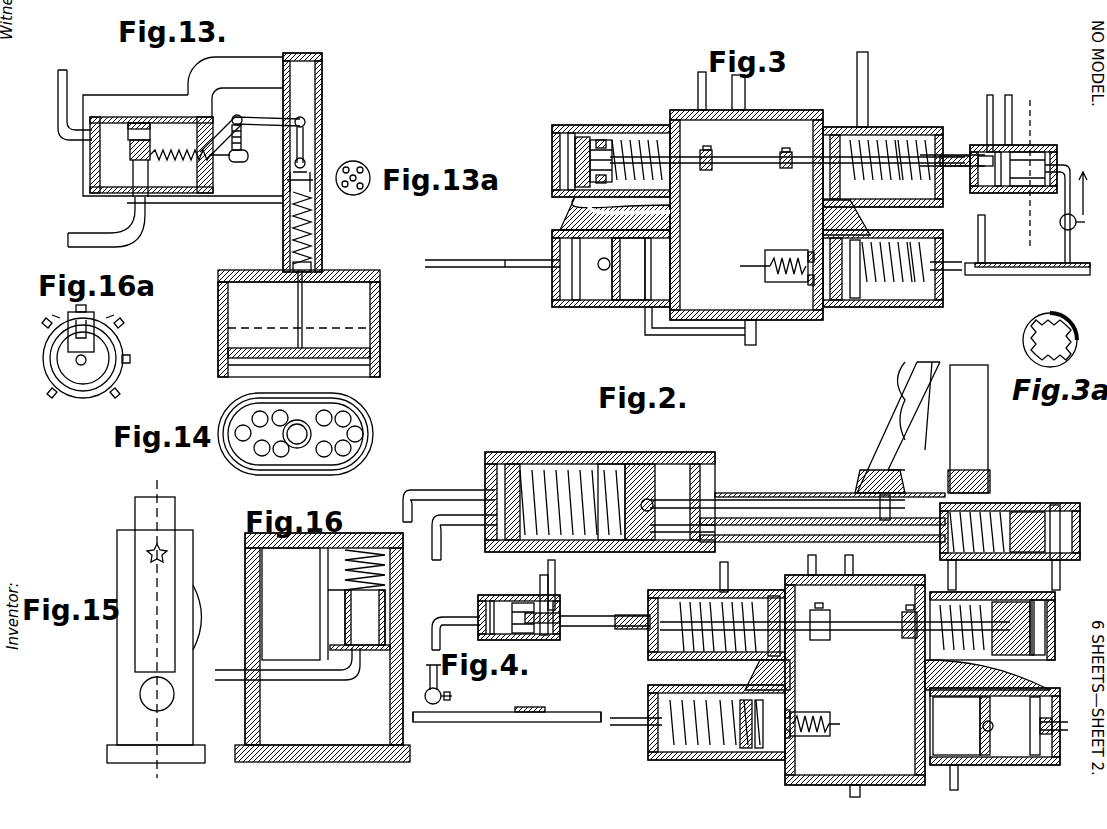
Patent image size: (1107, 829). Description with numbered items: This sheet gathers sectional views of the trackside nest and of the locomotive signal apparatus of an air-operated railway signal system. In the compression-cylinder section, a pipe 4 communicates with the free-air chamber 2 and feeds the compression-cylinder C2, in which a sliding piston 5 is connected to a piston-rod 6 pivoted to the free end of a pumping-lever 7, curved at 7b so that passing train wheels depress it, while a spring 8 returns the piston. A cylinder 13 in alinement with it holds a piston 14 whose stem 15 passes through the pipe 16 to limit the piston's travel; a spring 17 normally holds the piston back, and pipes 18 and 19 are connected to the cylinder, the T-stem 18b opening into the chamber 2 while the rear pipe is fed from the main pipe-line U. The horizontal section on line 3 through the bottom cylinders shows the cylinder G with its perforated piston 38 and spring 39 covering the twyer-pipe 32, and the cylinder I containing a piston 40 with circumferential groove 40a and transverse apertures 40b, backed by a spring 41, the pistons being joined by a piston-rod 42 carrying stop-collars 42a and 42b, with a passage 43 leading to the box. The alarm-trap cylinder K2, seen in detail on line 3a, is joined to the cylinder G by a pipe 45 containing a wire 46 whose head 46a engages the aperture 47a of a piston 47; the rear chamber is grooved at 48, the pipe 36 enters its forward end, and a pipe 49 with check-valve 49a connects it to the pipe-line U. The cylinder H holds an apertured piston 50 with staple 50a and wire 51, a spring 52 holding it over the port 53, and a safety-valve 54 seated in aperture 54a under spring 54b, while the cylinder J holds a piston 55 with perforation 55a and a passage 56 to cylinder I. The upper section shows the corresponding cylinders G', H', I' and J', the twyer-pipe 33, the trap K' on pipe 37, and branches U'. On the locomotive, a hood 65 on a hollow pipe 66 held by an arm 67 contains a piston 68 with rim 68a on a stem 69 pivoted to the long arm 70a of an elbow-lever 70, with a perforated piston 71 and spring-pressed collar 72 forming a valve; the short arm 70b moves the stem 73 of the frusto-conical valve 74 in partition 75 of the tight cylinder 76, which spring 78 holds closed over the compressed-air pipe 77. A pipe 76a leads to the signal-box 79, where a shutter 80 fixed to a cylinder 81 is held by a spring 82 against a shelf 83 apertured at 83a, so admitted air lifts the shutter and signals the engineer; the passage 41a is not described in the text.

In FIG. 3, the air-chamber 2 is at (746, 215).
In FIG. 2, the air-chamber 2 is at (855, 680).
In FIG. 3, the section line 3 is at (708, 330).
In FIG. 2, the section line 3 is at (864, 790).
In FIG. 3, the section line 3a is at (1026, 164).
In FIG. 3, the pipe 4 is at (732, 99).
In FIG. 2, the pipe 4 is at (853, 565).
In FIG. 2, the sliding piston 5 is at (650, 464).
In FIG. 2, the piston-rod 6 is at (730, 493).
In FIG. 2, the pumping-lever 7 is at (880, 437).
In FIG. 3, the curved portion of lever 7b is at (907, 357).
In FIG. 2, the spring 8 is at (545, 470).
In FIG. 2, the cylinder 13 is at (1010, 521).
In FIG. 2, the piston 14 is at (1028, 553).
In FIG. 2, the stem 15 is at (800, 535).
In FIG. 15, the pipe 16 is at (156, 626).
In FIG. 2, the pipe 16 is at (822, 509).
In FIG. 2, the spring 17 is at (988, 512).
In FIG. 2, the pipe 18 is at (966, 575).
In FIG. 3, the T-stem 18b is at (698, 95).
In FIG. 2, the T-stem 18b is at (808, 565).
In FIG. 2, the pipe 19 is at (1068, 547).
In FIG. 3, the twyer-pipe 32 is at (870, 90).
In FIG. 2, the twyer-pipe 33 is at (720, 570).
In FIG. 3, the pipe 36 is at (999, 106).
In FIG. 2, the pipe 37 is at (555, 580).
In FIG. 3, the perforated piston 38 is at (835, 135).
In FIG. 2, the perforated piston 38 is at (782, 612).
In FIG. 3, the spring 39 is at (900, 140).
In FIG. 2, the spring 39 is at (680, 610).
In FIG. 3, the piston 40 is at (592, 160).
In FIG. 2, the piston 40 is at (1025, 630).
In FIG. 3, the circumferential groove 40a is at (590, 140).
In FIG. 2, the circumferential groove 40a is at (1032, 600).
In FIG. 3, the transverse apertures 40b is at (598, 146).
In FIG. 3, the spring 41 is at (632, 140).
In FIG. 2, the spring 41 is at (975, 605).
In FIG. 2, the passage 41a is at (1015, 670).
In FIG. 3, the piston-rod 42 is at (787, 153).
In FIG. 2, the piston-rod 42 is at (835, 622).
In FIG. 3, the collar 42a is at (712, 137).
In FIG. 2, the collar 42a is at (898, 629).
In FIG. 3, the collar 42b is at (782, 138).
In FIG. 2, the collar 42b is at (822, 647).
In FIG. 3, the passage 43 is at (672, 215).
In FIG. 2, the passage 43 is at (925, 677).
In FIG. 3, the pipe 45 is at (948, 155).
In FIG. 2, the pipe 45 is at (598, 610).
In FIG. 3, the wire 46 is at (955, 168).
In FIG. 3, the head 46a is at (990, 168).
In FIG. 2, the head 46a is at (548, 625).
In FIG. 3, the piston 47 is at (1005, 125).
In FIG. 2, the piston 47 is at (530, 600).
In FIG. 3, the aperture 47a is at (998, 152).
In FIG. 2, the aperture 47a is at (496, 600).
In FIG. 3, the groove 48 is at (1040, 152).
In FIG. 3A, the groove 48 is at (1070, 330).
In FIG. 2, the groove 48 is at (520, 635).
In FIG. 3, the pipe 49 is at (1065, 243).
In FIG. 4, the pipe 49 is at (442, 659).
In FIG. 3, the check-valve 49a is at (1062, 214).
In FIG. 4, the check-valve 49a is at (452, 696).
In FIG. 3, the apertured piston 50 is at (838, 300).
In FIG. 2, the apertured piston 50 is at (748, 752).
In FIG. 3, the staple 50a is at (855, 300).
In FIG. 2, the staple 50a is at (735, 752).
In FIG. 3, the wire 51 is at (915, 314).
In FIG. 2, the wire 51 is at (630, 755).
In FIG. 4, the wire 51 is at (530, 701).
In FIG. 3, the spring 52 is at (893, 245).
In FIG. 2, the spring 52 is at (694, 700).
In FIG. 3, the port 53 is at (825, 212).
In FIG. 2, the port 53 is at (790, 673).
In FIG. 3, the safety-valve 54 is at (770, 275).
In FIG. 2, the safety-valve 54 is at (815, 732).
In FIG. 3, the aperture 54a is at (808, 258).
In FIG. 2, the aperture 54a is at (809, 703).
In FIG. 3, the spring 54b is at (808, 282).
In FIG. 2, the spring 54b is at (821, 741).
In FIG. 3, the piston 55 is at (628, 267).
In FIG. 2, the piston 55 is at (988, 726).
In FIG. 3, the perforation 55a is at (622, 250).
In FIG. 2, the perforation 55a is at (985, 708).
In FIG. 3, the passage 56 is at (585, 210).
In FIG. 2, the passage 56 is at (925, 690).
In FIG. 13, the hood 65 is at (381, 350).
In FIG. 14, the hood 65 is at (335, 476).
In FIG. 13, the hollow pipe 66 is at (323, 233).
In FIG. 13, the arm 67 is at (235, 87).
In FIG. 13, the piston 68 is at (258, 348).
In FIG. 14, the piston 68 is at (330, 428).
In FIG. 13, the rim 68a is at (222, 360).
In FIG. 13, the stem 69 is at (303, 316).
In FIG. 13, the elbow-lever 70 is at (270, 118).
In FIG. 13, the long arm 70a is at (305, 140).
In FIG. 13, the short arm 70b is at (254, 137).
In FIG. 13, the perforated piston 71 is at (312, 175).
In FIG. 13A, the perforated piston 71 is at (358, 165).
In FIG. 13, the spring-pressed collar 72 is at (312, 200).
In FIG. 13, the stem 73 is at (225, 160).
In FIG. 13, the frusto-conical valve 74 is at (130, 155).
In FIG. 13, the partition 75 is at (128, 140).
In FIG. 13, the tight cylinder 76 is at (170, 127).
In FIG. 13, the pipe 76a is at (60, 118).
In FIG. 16, the pipe 76a is at (287, 663).
In FIG. 13, the pipe 77 is at (106, 222).
In FIG. 13, the spring 78 is at (175, 197).
In FIG. 16, the signal-box 79 is at (303, 604).
In FIG. 16A, the shutter 80 is at (92, 316).
In FIG. 15, the shutter 80 is at (157, 627).
In FIG. 4, the shutter 80 is at (443, 617).
In FIG. 16A, the cylinder 81 is at (120, 340).
In FIG. 16, the cylinder 81 is at (360, 600).
In FIG. 16, the spring 82 is at (322, 635).
In FIG. 16, the shelf 83 is at (350, 652).
In FIG. 16, the aperture 83a is at (362, 652).
In FIG. 2, the compression-cylinder C2 is at (585, 465).
In FIG. 3, the cylinder G is at (883, 150).
In FIG. 2, the cylinder G' is at (716, 614).
In FIG. 3, the cylinder H is at (883, 281).
In FIG. 2, the cylinder H' is at (716, 732).
In FIG. 3, the cylinder I is at (611, 146).
In FIG. 2, the cylinder I' is at (1000, 626).
In FIG. 3, the cylinder J is at (611, 278).
In FIG. 2, the cylinder J' is at (995, 739).
In FIG. 3, the alarm-trap cylinder K2 is at (1019, 143).
In FIG. 3A, the alarm-trap cylinder K2 is at (1058, 344).
In FIG. 2, the alarm-trap K' is at (509, 605).
In FIG. 3, the pipe-line U is at (1027, 255).
In FIG. 2, the branch U' is at (1075, 743).
In FIG. 4, the branch U' is at (507, 707).